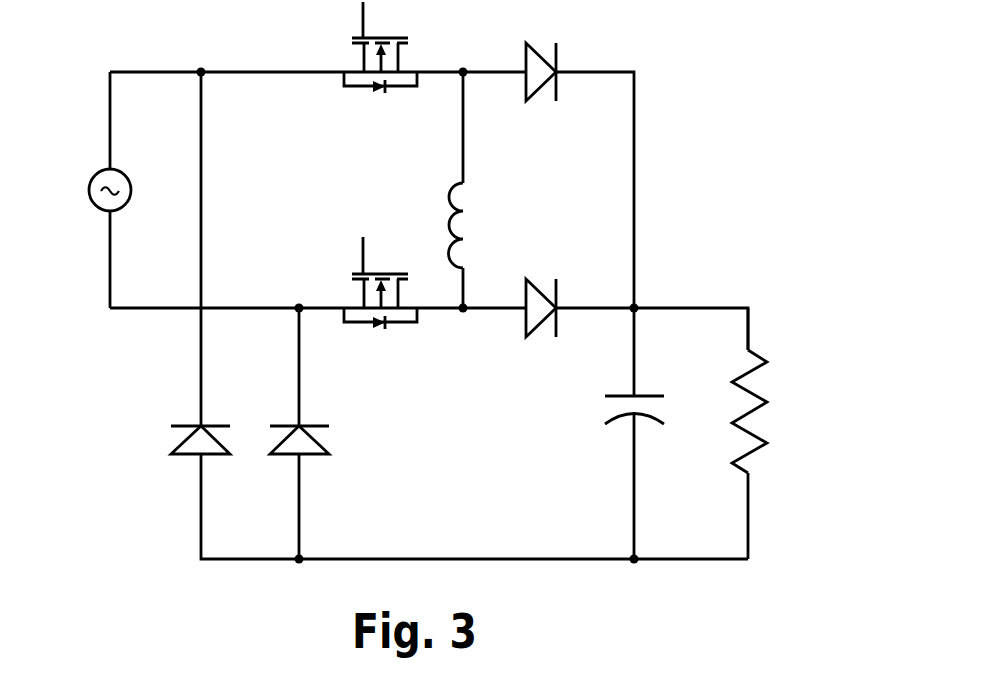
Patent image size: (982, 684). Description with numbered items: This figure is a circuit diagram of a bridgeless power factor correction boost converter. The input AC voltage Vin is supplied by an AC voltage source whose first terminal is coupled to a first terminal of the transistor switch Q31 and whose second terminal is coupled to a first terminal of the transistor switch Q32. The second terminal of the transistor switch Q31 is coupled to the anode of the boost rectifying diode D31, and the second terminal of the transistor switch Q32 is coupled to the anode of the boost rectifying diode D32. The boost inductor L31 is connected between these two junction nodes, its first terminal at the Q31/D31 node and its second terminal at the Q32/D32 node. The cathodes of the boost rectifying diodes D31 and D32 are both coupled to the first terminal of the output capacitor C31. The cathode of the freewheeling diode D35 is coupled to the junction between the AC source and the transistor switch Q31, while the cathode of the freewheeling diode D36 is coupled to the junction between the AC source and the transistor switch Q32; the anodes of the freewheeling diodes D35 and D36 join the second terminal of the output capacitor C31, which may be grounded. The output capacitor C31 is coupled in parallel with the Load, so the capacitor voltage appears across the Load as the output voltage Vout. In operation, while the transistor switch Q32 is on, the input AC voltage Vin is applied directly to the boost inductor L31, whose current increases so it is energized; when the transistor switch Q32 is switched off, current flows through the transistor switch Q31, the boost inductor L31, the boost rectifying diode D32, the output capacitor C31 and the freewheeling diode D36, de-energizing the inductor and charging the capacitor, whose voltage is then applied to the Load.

The input AC voltage Vin is at (84, 190).
The transistor switch Q31 is at (361, 47).
The transistor switch Q32 is at (361, 283).
The boost rectifying diode D31 is at (542, 55).
The boost rectifying diode D32 is at (542, 327).
The boost inductor L31 is at (483, 225).
The freewheeling diode D35 is at (170, 439).
The freewheeling diode D36 is at (328, 439).
The output capacitor C31 is at (609, 409).
The output voltage Vout is at (788, 339).
The load Load is at (780, 415).